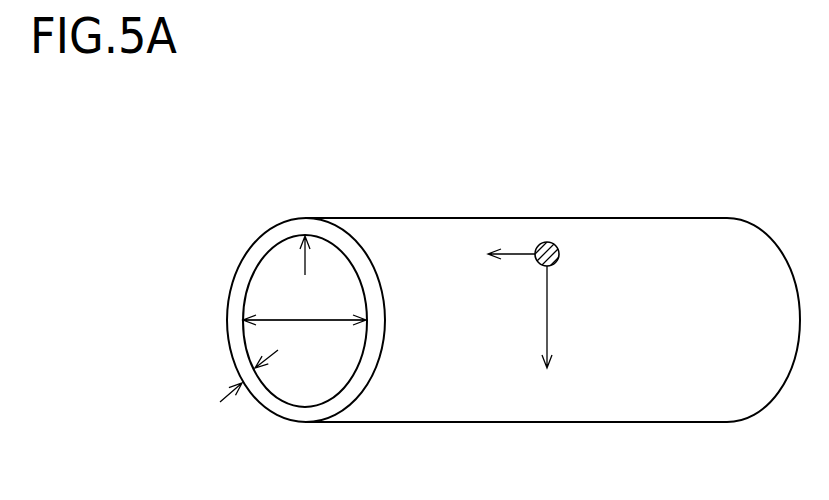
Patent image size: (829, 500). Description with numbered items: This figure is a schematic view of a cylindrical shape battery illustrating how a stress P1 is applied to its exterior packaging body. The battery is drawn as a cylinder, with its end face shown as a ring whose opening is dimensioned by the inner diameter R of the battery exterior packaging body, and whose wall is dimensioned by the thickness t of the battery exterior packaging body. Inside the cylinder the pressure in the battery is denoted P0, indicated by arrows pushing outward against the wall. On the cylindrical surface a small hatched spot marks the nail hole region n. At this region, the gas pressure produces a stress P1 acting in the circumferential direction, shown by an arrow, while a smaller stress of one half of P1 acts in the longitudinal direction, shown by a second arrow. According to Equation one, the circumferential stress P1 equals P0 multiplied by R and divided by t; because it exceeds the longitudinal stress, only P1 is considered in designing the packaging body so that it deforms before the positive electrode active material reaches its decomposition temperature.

The pressure in the battery P0 is at (304, 280).
The inner diameter of the battery exterior packaging body R is at (317, 322).
The thickness of the battery exterior packaging body t is at (247, 376).
The nail hole region n is at (547, 242).
The stress applied in the circumferential direction P1 is at (482, 258).